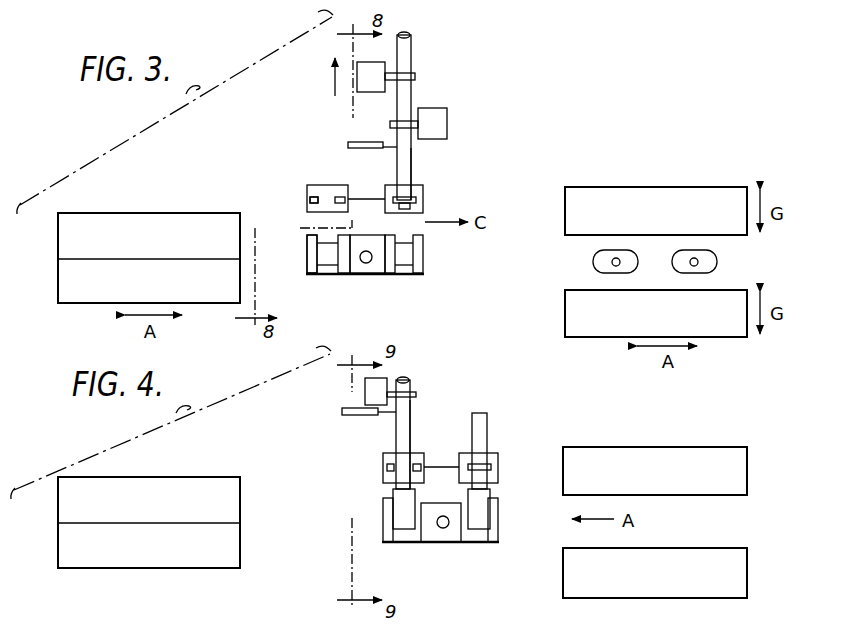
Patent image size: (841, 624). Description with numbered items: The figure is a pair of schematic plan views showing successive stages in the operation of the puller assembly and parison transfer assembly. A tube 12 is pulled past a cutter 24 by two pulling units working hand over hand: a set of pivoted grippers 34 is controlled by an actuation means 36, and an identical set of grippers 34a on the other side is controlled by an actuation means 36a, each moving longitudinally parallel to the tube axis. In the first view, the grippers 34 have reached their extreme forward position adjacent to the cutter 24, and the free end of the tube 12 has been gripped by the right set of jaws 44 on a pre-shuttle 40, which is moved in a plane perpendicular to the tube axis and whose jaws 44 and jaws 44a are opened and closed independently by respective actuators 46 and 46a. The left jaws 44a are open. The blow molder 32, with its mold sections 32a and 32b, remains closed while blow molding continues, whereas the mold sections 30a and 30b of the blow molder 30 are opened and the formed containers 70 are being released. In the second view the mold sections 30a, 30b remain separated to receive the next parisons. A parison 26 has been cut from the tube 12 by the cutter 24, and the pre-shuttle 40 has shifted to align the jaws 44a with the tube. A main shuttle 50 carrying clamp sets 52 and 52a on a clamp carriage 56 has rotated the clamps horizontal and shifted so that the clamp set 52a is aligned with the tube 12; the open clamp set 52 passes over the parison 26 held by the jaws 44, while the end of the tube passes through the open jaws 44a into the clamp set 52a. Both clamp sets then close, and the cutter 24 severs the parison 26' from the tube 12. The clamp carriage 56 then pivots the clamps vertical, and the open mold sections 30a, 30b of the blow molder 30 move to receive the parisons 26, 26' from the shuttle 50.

In FIG. 3, the tube 12 is at (412, 54).
In FIG. 4, the tube 12 is at (412, 386).
In FIG. 3, the cutter 24 is at (370, 149).
In FIG. 4, the cutter 24 is at (345, 418).
In FIG. 3, the parison 26 is at (432, 170).
In FIG. 4, the parison 26 is at (502, 449).
In FIG. 4, the parison 26' is at (373, 444).
In FIG. 3, the blow molder 30 is at (675, 153).
In FIG. 3, the mold section 30a is at (644, 221).
In FIG. 4, the mold section 30a is at (639, 480).
In FIG. 3, the mold section 30b is at (644, 324).
In FIG. 4, the mold section 30b is at (639, 582).
In FIG. 3, the blow molder 32 is at (134, 192).
In FIG. 4, the blow molder 32 is at (140, 462).
In FIG. 3, the mold section 32a is at (131, 247).
In FIG. 4, the mold section 32a is at (131, 510).
In FIG. 3, the mold section 32b is at (131, 291).
In FIG. 4, the mold section 32b is at (131, 553).
In FIG. 3, the grippers 34 is at (390, 125).
In FIG. 3, the grippers 34a is at (416, 77).
In FIG. 3, the actuation means 36 is at (448, 128).
In FIG. 3, the actuation means 36a is at (372, 92).
In FIG. 4, the actuation means 36a is at (365, 393).
In FIG. 4, the pre-shuttle 40 is at (437, 447).
In FIG. 3, the jaws 44 is at (425, 185).
In FIG. 4, the jaws 44 is at (500, 456).
In FIG. 3, the jaws 44a is at (307, 210).
In FIG. 4, the jaws 44a is at (383, 470).
In FIG. 3, the actuator 46 is at (424, 199).
In FIG. 3, the actuator 46a is at (322, 185).
In FIG. 3, the shuttle 50 is at (336, 280).
In FIG. 4, the clamp set 52 is at (490, 493).
In FIG. 3, the clamp set 52a is at (316, 246).
In FIG. 4, the clamp set 52a is at (393, 507).
In FIG. 4, the clamp carriage 56 is at (437, 543).
In FIG. 3, the formed containers 70 is at (717, 262).